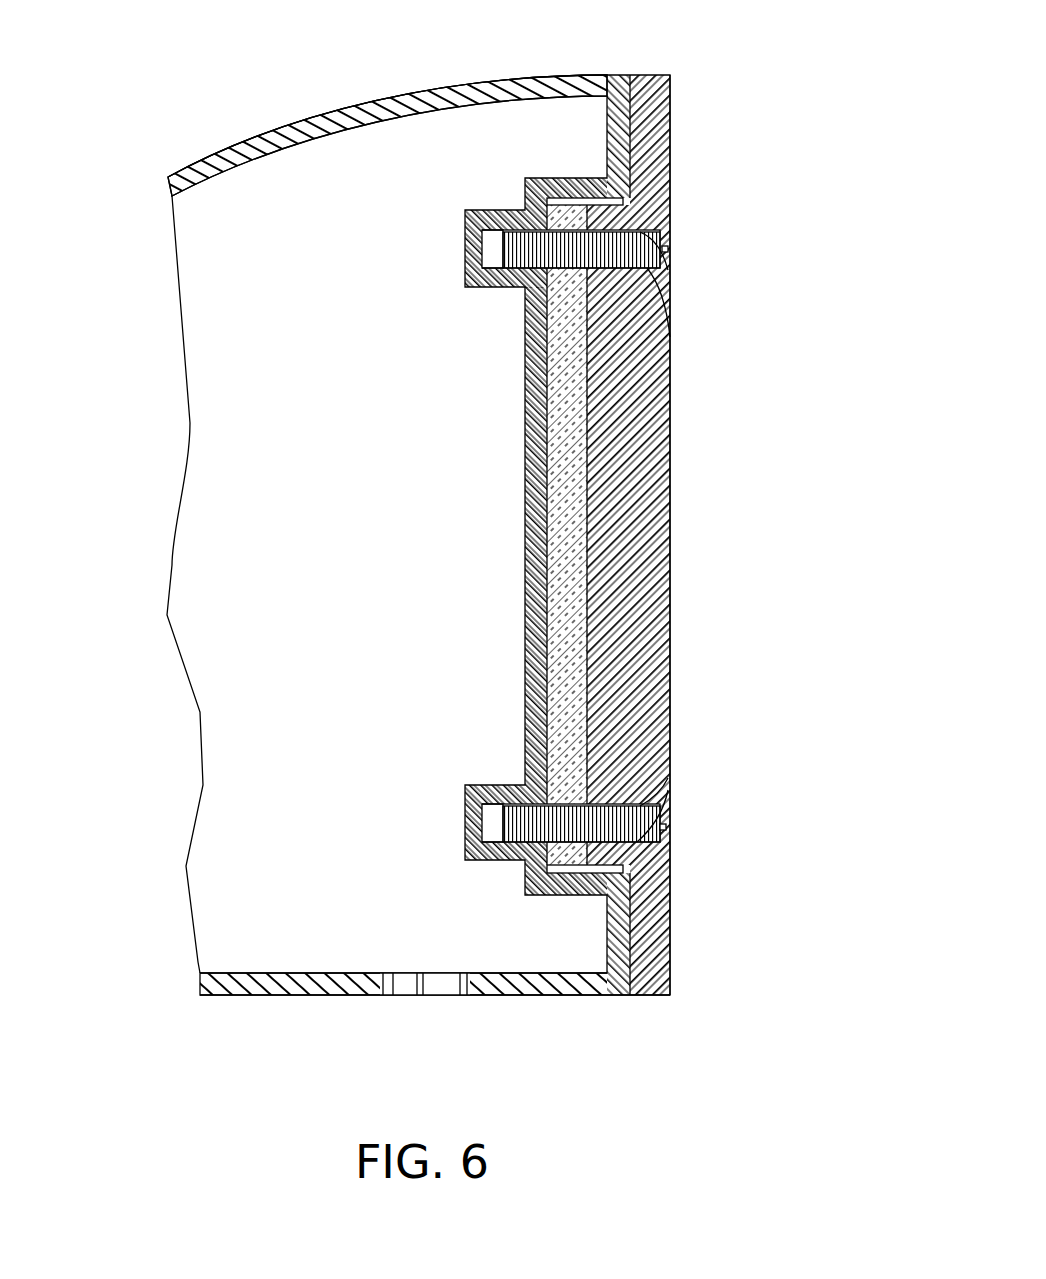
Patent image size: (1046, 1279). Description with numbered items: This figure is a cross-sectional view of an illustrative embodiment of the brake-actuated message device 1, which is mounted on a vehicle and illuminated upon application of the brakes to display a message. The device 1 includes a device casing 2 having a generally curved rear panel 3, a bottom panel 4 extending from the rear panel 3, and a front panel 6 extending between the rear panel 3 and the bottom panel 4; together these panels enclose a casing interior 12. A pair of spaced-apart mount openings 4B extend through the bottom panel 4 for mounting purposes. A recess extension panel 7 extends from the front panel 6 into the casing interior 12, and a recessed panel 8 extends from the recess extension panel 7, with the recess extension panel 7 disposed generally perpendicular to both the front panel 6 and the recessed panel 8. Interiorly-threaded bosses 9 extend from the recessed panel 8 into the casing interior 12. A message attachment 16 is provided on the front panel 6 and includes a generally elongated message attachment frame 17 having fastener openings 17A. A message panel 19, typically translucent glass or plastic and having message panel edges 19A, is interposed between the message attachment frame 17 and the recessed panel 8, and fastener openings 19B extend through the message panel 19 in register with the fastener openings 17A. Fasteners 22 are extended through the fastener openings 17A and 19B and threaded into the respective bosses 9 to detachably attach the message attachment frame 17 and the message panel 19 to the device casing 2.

The brake-actuated message device 1 is at (182, 85).
The device casing 2 is at (358, 100).
The rear panel 3 is at (385, 93).
The bottom panel 4 is at (435, 1017).
The mount opening 4B is at (440, 997).
The front panel 6 is at (640, 136).
The recess extension panel 7 is at (640, 203).
The recessed panel 8 is at (560, 453).
The interiorly-threaded boss 9 is at (465, 243).
The casing interior 12 is at (248, 355).
The message attachment 16 is at (503, 515).
The message attachment frame 17 is at (670, 170).
The fastener opening 17A is at (645, 257).
The message panel 19 is at (600, 550).
The message panel edge 19A is at (560, 205).
The fastener opening 19B is at (670, 338).
The fastener 22 is at (670, 240).